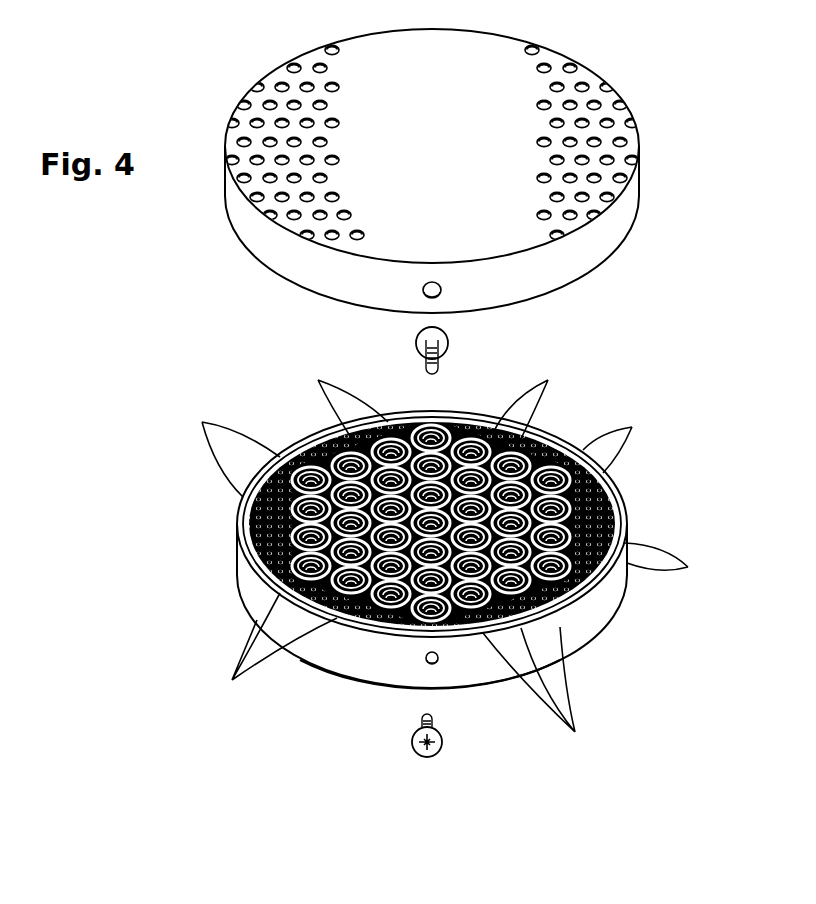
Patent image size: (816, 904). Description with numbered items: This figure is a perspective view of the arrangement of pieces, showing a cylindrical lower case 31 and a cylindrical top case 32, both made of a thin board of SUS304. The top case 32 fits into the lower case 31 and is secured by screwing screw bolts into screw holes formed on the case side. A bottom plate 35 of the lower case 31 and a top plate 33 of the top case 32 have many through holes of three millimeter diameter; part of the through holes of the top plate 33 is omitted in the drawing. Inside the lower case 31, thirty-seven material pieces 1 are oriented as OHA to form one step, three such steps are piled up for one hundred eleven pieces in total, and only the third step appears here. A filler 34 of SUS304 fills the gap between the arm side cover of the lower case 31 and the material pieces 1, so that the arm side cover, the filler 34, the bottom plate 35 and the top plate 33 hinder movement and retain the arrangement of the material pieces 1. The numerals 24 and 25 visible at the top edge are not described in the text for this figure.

The material piece 1 is at (450, 555).
The upper member 24 is at (46, 7).
The connecting member 25 is at (356, 7).
The lower case 31 is at (480, 590).
The top case 32 is at (595, 246).
The top plate 33 is at (488, 62).
The filler 34 is at (622, 498).
The bottom plate 35 is at (482, 686).